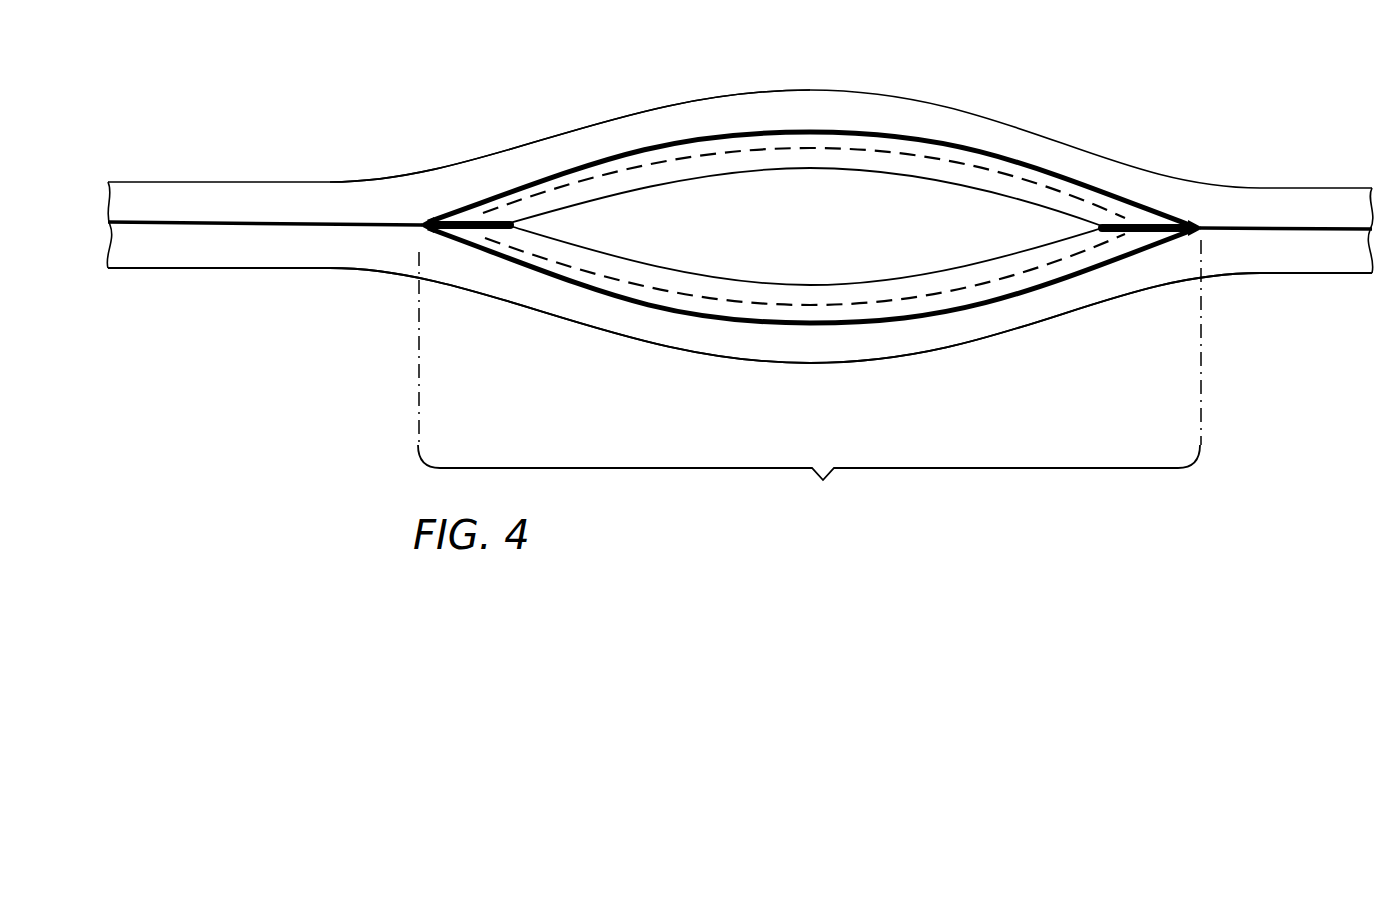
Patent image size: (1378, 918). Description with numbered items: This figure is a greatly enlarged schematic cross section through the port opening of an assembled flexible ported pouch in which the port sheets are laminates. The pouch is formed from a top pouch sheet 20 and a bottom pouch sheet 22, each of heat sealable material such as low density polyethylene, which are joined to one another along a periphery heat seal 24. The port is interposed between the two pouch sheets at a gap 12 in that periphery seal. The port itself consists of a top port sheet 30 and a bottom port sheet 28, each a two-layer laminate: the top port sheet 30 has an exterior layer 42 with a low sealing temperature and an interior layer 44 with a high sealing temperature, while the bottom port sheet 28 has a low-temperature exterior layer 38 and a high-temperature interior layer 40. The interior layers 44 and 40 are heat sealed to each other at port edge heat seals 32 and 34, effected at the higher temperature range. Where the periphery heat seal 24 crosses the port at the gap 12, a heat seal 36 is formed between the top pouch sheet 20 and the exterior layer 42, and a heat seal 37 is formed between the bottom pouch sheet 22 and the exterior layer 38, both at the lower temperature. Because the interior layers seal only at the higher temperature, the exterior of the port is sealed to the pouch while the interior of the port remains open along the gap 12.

The gap 12 is at (823, 480).
The top pouch sheet 20 is at (1325, 205).
The bottom pouch sheet 22 is at (1313, 263).
The periphery heat seal 24 is at (262, 220).
The bottom port sheet 28 is at (998, 284).
The top port sheet 30 is at (862, 148).
The port edge heat seal 32 is at (1162, 218).
The port edge heat seal 34 is at (470, 213).
The heat seal 36 is at (577, 162).
The heat seal 37 is at (500, 262).
The low sealing temperature layer of bottom port sheet 38 is at (1047, 273).
The high sealing temperature layer of bottom port sheet 40 is at (966, 277).
The low sealing temperature layer of top port sheet 42 is at (684, 147).
The high sealing temperature layer of top port sheet 44 is at (693, 170).